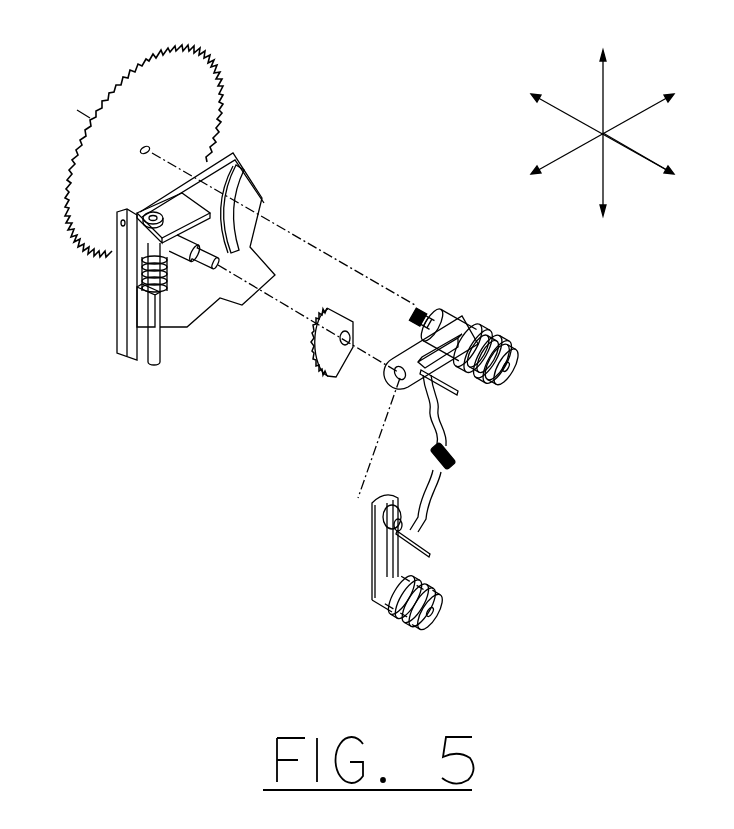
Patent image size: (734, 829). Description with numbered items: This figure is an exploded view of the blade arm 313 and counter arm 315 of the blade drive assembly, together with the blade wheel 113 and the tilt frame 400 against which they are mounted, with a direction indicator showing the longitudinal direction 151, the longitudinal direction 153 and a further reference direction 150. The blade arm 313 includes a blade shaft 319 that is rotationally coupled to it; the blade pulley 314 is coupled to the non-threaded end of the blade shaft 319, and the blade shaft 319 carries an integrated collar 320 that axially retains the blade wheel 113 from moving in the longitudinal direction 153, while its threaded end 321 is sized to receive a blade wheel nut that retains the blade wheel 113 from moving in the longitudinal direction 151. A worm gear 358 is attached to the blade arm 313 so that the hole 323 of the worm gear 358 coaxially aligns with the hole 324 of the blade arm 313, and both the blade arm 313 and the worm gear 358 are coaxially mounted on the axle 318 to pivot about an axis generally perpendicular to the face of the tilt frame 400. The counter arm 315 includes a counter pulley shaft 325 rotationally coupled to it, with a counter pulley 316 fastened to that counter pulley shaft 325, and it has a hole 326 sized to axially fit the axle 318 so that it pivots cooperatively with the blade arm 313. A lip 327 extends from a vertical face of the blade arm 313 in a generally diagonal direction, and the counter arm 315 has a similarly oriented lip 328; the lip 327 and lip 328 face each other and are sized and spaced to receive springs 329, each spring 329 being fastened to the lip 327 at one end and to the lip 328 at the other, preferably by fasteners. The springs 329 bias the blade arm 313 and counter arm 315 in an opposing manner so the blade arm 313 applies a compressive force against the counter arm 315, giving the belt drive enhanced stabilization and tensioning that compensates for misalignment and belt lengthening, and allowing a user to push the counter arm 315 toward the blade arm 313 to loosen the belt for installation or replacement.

The blade wheel 113 is at (198, 112).
The tilt frame 400 is at (252, 192).
The axle 318 is at (252, 247).
The worm gear 358 is at (337, 312).
The hole 323 is at (350, 333).
The hole 324 is at (401, 368).
The threaded end 321 is at (425, 305).
The collar 320 is at (445, 299).
The blade pulley 314 is at (500, 332).
The blade shaft 319 is at (513, 360).
The lip 327 is at (458, 392).
The blade arm 313 is at (390, 383).
The springs 329 is at (455, 460).
The hole 326 is at (375, 528).
The counter arm 315 is at (372, 558).
The lip 328 is at (431, 555).
The counter pulley 316 is at (393, 617).
The counter pulley shaft 325 is at (427, 614).
The direction axis 150 is at (645, 108).
The longitudinal direction 151 is at (558, 108).
The longitudinal direction 153 is at (660, 165).